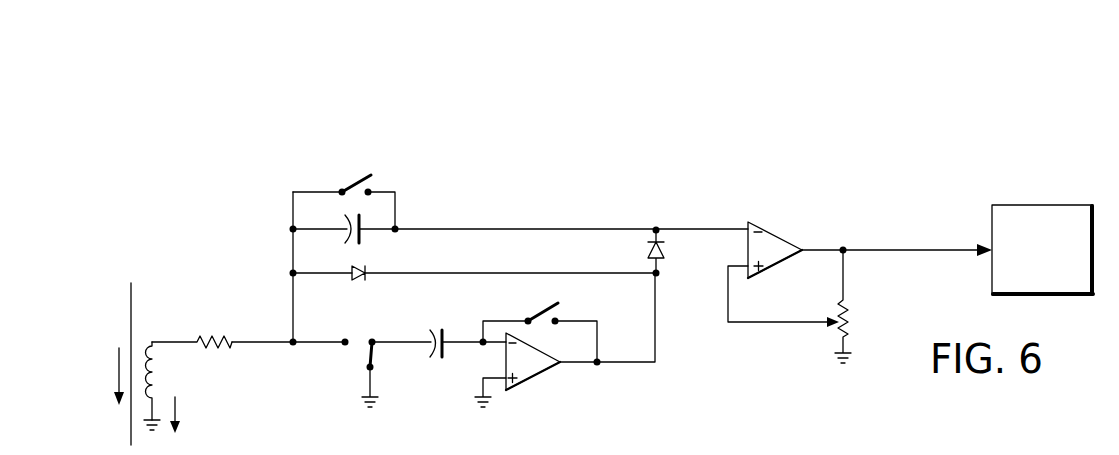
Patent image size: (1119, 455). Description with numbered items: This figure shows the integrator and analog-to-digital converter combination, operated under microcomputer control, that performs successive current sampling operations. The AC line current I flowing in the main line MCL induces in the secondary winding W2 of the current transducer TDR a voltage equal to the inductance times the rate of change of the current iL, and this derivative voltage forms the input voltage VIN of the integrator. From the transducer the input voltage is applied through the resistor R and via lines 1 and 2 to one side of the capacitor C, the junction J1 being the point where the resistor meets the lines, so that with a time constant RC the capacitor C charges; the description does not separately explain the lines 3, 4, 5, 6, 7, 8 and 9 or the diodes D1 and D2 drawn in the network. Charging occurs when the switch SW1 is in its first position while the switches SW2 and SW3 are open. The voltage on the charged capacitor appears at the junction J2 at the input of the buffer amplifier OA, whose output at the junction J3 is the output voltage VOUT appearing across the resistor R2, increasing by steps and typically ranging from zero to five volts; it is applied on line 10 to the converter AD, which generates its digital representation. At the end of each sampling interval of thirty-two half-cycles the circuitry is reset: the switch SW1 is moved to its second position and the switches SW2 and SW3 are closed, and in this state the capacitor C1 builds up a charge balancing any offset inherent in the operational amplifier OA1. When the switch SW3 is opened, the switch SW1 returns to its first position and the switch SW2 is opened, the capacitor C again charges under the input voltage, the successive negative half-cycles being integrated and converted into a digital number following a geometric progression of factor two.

The line 1 is at (261, 345).
The line 2 is at (289, 302).
The diode D1 line 3 is at (453, 272).
The capacitor C line 4 is at (498, 229).
The switch SW3 bypass line 5 is at (397, 208).
The operational amplifier OA1 input line 6 is at (464, 340).
The feedback line with switch SW2 7 is at (598, 335).
The operational amplifier OA1 output line 8 is at (655, 312).
The reference voltage line to OA 9 is at (782, 324).
The line 10 is at (953, 247).
The main line MCL is at (133, 304).
The current transducer TDR is at (214, 298).
The secondary winding W2 is at (153, 366).
The resistor R is at (218, 334).
The resistor R2 is at (850, 313).
The capacitor C is at (349, 241).
The capacitor C1 is at (433, 329).
The diode D1 is at (362, 280).
The diode D2 is at (646, 250).
The switch SW1 is at (363, 351).
The switch SW2 is at (543, 303).
The switch SW3 is at (350, 173).
The buffer amplifier OA is at (786, 232).
The operational amplifier OA1 is at (530, 385).
The junction J1 is at (292, 347).
The junction J2 is at (656, 226).
The junction J3 is at (843, 246).
The AC line current I is at (118, 370).
The current iL is at (179, 409).
The input voltage VIN is at (168, 319).
The output voltage VOUT is at (908, 232).
The A/D converter AD is at (1042, 250).